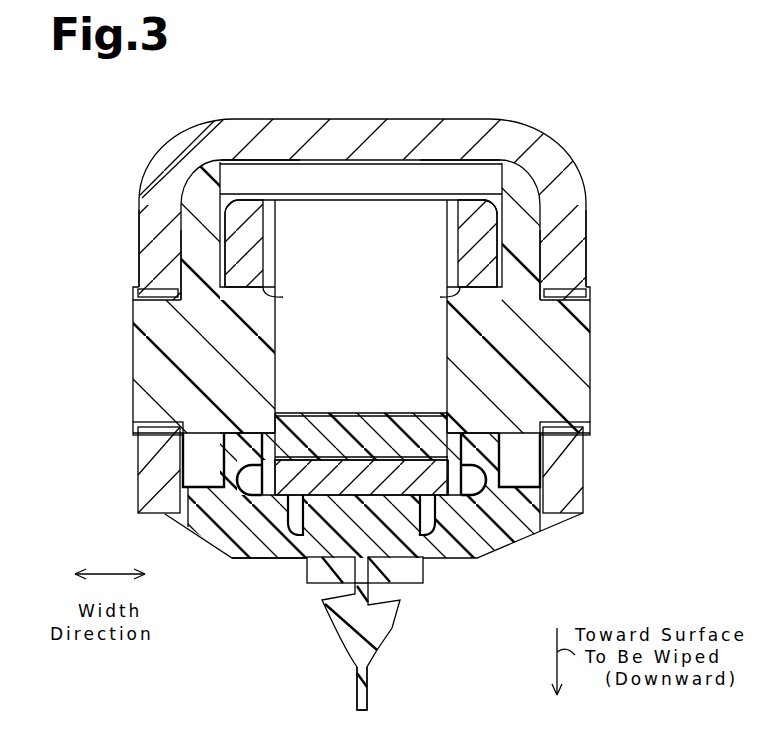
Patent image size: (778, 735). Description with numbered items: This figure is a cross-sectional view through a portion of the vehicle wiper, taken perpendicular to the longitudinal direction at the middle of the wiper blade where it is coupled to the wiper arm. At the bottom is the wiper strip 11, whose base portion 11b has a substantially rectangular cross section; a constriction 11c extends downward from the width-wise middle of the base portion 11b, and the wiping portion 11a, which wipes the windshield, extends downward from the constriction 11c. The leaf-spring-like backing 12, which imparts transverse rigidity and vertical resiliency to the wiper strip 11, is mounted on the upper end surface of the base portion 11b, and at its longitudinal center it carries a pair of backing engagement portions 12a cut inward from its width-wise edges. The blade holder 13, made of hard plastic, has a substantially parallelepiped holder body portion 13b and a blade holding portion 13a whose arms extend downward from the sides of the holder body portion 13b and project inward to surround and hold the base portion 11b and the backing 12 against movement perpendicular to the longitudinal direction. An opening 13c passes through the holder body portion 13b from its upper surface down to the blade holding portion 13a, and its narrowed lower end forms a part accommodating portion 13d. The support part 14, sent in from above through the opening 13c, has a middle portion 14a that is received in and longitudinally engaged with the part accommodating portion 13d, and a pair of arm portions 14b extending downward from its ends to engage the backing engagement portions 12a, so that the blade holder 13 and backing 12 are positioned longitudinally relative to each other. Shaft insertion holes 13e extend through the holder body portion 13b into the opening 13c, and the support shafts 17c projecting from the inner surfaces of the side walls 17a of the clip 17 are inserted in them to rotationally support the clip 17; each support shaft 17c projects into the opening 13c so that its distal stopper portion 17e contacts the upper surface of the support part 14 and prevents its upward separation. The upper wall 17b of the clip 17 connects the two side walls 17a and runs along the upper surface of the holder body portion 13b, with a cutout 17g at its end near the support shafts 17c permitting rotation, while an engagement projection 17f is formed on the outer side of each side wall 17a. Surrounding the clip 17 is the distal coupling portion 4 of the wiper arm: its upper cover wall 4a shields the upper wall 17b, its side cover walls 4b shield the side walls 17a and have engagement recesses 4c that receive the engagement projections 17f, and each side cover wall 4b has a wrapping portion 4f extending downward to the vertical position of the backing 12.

The distal coupling portion 4 is at (146, 181).
The upper cover wall 4a is at (313, 157).
The side cover walls 4b is at (139, 219).
The engagement recess 4c is at (150, 430).
The wrapping portion 4f is at (172, 482).
The wiper strip 11 is at (384, 640).
The wiping portion 11a is at (368, 690).
The base portion 11b is at (317, 523).
The constriction 11c is at (390, 543).
The backing 12 is at (360, 470).
The backing engagement portions 12a is at (262, 498).
The blade holder 13 is at (500, 240).
The blade holding portion 13a is at (277, 552).
The holder body portion 13b is at (490, 254).
The opening 13c is at (456, 237).
The part accommodating portion 13d is at (395, 458).
The shaft insertion holes 13e is at (262, 293).
The support part 14 is at (370, 432).
The middle portion 14a is at (340, 440).
The arm portions 14b is at (263, 473).
The clip 17 is at (538, 185).
The side walls 17a is at (192, 260).
The upper wall 17b is at (258, 160).
The support shaft 17c is at (213, 453).
The stopper portion 17e is at (437, 420).
The engagement projection 17f is at (150, 296).
The cutout 17g is at (482, 174).